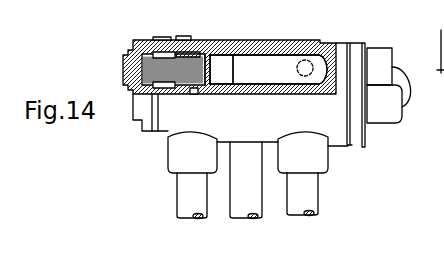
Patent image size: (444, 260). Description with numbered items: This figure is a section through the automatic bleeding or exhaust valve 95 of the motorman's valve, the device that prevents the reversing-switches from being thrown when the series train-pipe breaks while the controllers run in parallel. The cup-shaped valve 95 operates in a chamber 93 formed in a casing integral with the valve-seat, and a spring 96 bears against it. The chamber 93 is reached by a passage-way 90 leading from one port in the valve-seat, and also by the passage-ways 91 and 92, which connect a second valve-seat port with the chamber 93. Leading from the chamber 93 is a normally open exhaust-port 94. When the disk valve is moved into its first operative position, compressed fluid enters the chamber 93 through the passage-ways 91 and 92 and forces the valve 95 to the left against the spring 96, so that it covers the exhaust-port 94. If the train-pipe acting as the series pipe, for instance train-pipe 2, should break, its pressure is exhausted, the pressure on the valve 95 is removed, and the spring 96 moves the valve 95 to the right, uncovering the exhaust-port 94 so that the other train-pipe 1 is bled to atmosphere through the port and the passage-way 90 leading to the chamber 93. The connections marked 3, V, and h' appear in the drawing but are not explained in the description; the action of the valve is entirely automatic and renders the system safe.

The spring 96 is at (158, 60).
The passage-way 90 is at (181, 33).
The automatic bleeding or exhaust valve 95 is at (209, 57).
The valve-chamber 93 is at (221, 69).
The passage-way 92 is at (280, 69).
The passage-way 91 is at (297, 53).
The exhaust-port 94 is at (199, 96).
The train-pipe 2 is at (192, 175).
The port 3 is at (246, 180).
The train-pipe 1 is at (303, 174).
The valve body V is at (244, 93).
The handle h' is at (400, 85).